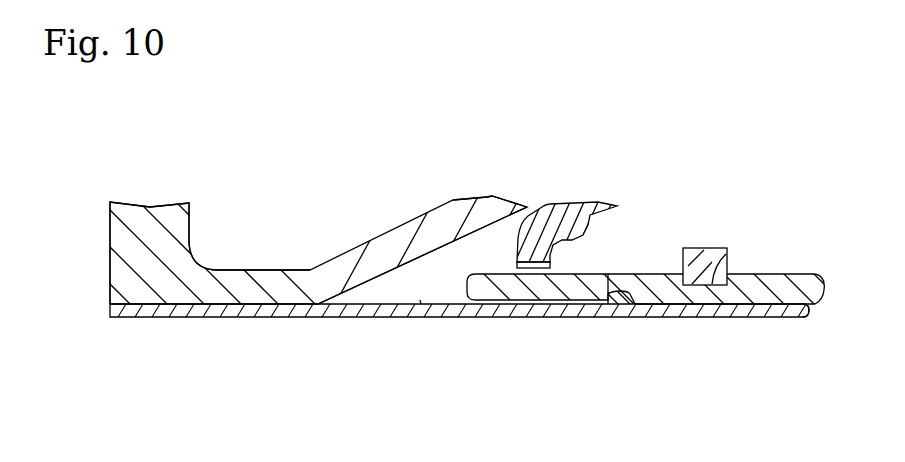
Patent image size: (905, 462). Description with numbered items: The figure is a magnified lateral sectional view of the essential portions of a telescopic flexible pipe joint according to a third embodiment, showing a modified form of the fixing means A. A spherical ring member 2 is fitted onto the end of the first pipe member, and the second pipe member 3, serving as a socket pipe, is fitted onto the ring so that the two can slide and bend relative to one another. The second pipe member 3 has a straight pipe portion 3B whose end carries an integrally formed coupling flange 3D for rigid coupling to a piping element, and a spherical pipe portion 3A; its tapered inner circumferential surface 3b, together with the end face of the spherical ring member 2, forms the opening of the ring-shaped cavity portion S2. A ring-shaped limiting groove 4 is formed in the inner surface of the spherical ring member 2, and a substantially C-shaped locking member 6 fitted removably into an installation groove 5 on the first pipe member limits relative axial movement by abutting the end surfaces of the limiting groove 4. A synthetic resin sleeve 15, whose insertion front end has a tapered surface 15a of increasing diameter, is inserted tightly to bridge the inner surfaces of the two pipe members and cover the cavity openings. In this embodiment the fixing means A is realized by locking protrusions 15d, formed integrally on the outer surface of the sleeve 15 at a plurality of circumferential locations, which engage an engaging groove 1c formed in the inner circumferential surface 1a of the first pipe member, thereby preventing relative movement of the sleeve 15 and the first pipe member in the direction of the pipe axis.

The second pipe member 3 is at (371, 235).
The coupling flange 3D is at (153, 207).
The straight pipe portion 3B is at (232, 279).
The spherical pipe portion 3A is at (465, 220).
The tapered inner circumferential surface 3b is at (352, 300).
The spherical ring member 2 is at (577, 214).
The limiting groove 4 is at (578, 258).
The inner circumferential surface of the first pipe member 1a is at (720, 300).
The engaging groove 1c is at (641, 300).
The sleeve 15 is at (458, 307).
The tapered surface 15a is at (800, 314).
The locking protrusions 15d is at (609, 292).
The locking member 6 is at (702, 256).
The installation groove 5 is at (727, 259).
The ring-shaped cavity portion S2 is at (420, 300).
The fixing means A is at (622, 334).